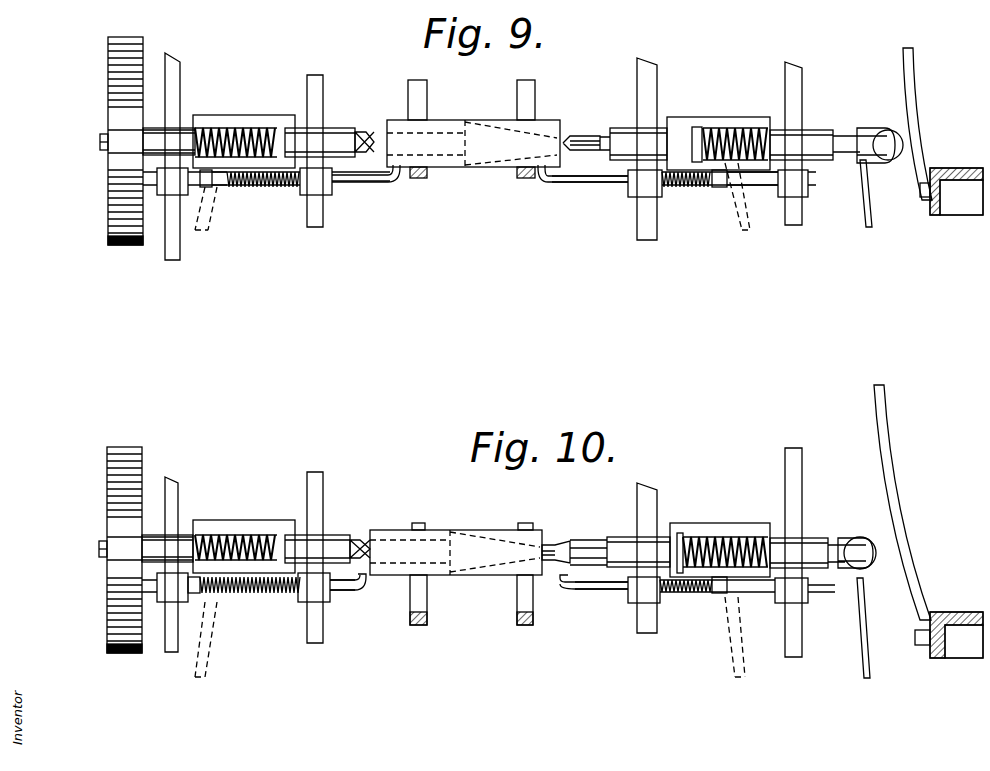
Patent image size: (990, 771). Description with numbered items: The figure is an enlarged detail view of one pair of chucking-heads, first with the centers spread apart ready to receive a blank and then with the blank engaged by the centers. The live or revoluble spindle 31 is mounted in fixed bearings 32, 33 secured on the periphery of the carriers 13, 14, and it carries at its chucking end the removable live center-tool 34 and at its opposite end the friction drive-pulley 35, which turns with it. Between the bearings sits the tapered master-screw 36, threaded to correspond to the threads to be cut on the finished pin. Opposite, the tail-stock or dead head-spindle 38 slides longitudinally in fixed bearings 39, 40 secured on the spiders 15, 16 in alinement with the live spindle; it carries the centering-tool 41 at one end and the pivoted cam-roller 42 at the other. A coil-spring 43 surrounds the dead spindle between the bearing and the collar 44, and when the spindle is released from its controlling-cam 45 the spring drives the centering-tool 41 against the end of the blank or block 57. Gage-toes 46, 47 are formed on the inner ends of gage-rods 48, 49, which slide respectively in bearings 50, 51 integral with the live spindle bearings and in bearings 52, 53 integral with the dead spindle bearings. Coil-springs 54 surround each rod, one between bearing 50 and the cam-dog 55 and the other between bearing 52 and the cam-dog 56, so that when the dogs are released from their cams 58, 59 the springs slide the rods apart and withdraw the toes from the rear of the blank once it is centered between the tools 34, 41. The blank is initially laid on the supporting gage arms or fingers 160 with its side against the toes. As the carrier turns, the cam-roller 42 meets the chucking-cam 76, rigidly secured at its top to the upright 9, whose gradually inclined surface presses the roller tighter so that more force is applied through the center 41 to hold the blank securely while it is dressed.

In FIG. 9, the upright 9 is at (951, 191).
In FIG. 10, the upright 9 is at (949, 635).
In FIG. 9, the carrier 13 is at (793, 225).
In FIG. 10, the carrier 13 is at (793, 657).
In FIG. 9, the carrier 14 is at (647, 240).
In FIG. 10, the carrier 14 is at (647, 633).
In FIG. 9, the spider 15 is at (315, 227).
In FIG. 10, the spider 15 is at (315, 643).
In FIG. 9, the spider 16 is at (172, 260).
In FIG. 10, the spider 16 is at (172, 652).
In FIG. 9, the live spindle 31 is at (100, 140).
In FIG. 10, the live spindle 31 is at (99, 549).
In FIG. 9, the fixed bearing 32 is at (325, 130).
In FIG. 10, the fixed bearing 32 is at (325, 540).
In FIG. 9, the fixed bearing 33 is at (170, 140).
In FIG. 10, the fixed bearing 33 is at (172, 545).
In FIG. 9, the live center-tool 34 is at (366, 132).
In FIG. 10, the live center-tool 34 is at (365, 540).
In FIG. 9, the friction drive-pulley 35 is at (124, 245).
In FIG. 10, the friction drive-pulley 35 is at (122, 653).
In FIG. 9, the master-screw 36 is at (238, 128).
In FIG. 10, the master-screw 36 is at (240, 535).
In FIG. 9, the dead head-spindle 38 is at (870, 128).
In FIG. 10, the dead head-spindle 38 is at (855, 538).
In FIG. 9, the fixed bearing 39 is at (815, 130).
In FIG. 10, the fixed bearing 39 is at (810, 538).
In FIG. 9, the fixed bearing 40 is at (628, 128).
In FIG. 10, the fixed bearing 40 is at (625, 537).
In FIG. 9, the centering-tool 41 is at (578, 136).
In FIG. 10, the centering-tool 41 is at (555, 545).
In FIG. 9, the cam-roller 42 is at (888, 160).
In FIG. 10, the cam-roller 42 is at (874, 548).
In FIG. 9, the coil-spring 43 is at (735, 128).
In FIG. 10, the coil-spring 43 is at (730, 537).
In FIG. 9, the collar 44 is at (700, 127).
In FIG. 10, the collar 44 is at (681, 533).
In FIG. 9, the controlling-cam 45 is at (866, 222).
In FIG. 10, the controlling-cam 45 is at (867, 615).
In FIG. 9, the gage-toe 46 is at (394, 183).
In FIG. 10, the gage-toe 46 is at (364, 591).
In FIG. 9, the gage-toe 47 is at (543, 183).
In FIG. 10, the gage-toe 47 is at (562, 592).
In FIG. 9, the gage-rod 48 is at (360, 182).
In FIG. 10, the gage-rod 48 is at (345, 590).
In FIG. 9, the gage-rod 49 is at (595, 183).
In FIG. 10, the gage-rod 49 is at (605, 590).
In FIG. 9, the bearing 50 is at (316, 181).
In FIG. 10, the bearing 50 is at (314, 587).
In FIG. 9, the bearing 51 is at (172, 181).
In FIG. 10, the bearing 51 is at (172, 587).
In FIG. 9, the bearing 52 is at (645, 183).
In FIG. 10, the bearing 52 is at (644, 590).
In FIG. 9, the bearing 53 is at (793, 183).
In FIG. 10, the bearing 53 is at (791, 590).
In FIG. 9, the coil-spring 54 is at (262, 187).
In FIG. 10, the coil-spring 54 is at (272, 593).
In FIG. 9, the cam-dog 55 is at (208, 187).
In FIG. 10, the cam-dog 55 is at (200, 595).
In FIG. 9, the cam-dog 56 is at (715, 190).
In FIG. 10, the cam-dog 56 is at (718, 595).
In FIG. 9, the blank 57 is at (458, 120).
In FIG. 10, the blank 57 is at (432, 530).
In FIG. 9, the cam 58 is at (204, 222).
In FIG. 10, the cam 58 is at (210, 670).
In FIG. 9, the cam 59 is at (735, 208).
In FIG. 10, the cam 59 is at (728, 678).
In FIG. 9, the chucking-cam 76 is at (926, 100).
In FIG. 10, the chucking-cam 76 is at (920, 510).
In FIG. 9, the supporting gage arms 160 is at (510, 180).
In FIG. 10, the supporting gage arms 160 is at (515, 614).